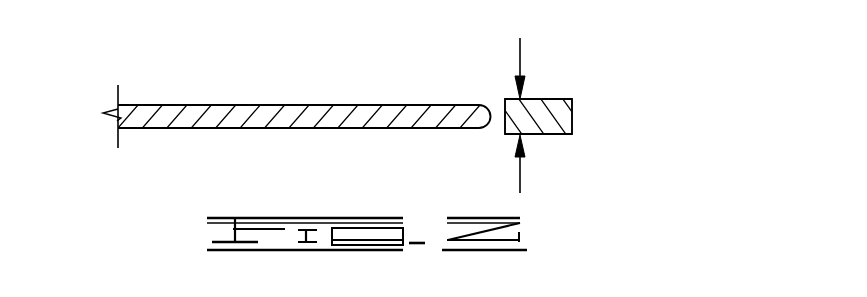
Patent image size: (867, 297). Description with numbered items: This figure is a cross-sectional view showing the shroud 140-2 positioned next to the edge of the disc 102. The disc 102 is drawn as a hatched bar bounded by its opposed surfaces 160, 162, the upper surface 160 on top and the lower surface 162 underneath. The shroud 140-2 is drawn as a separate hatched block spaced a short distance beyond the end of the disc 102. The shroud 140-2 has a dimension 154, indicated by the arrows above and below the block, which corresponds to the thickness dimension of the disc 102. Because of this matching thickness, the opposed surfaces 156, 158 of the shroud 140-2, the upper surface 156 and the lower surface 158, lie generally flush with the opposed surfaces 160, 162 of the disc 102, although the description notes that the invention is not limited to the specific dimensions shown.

The substrate 102 is at (373, 110).
The surface of the disc 160 is at (177, 105).
The surface of the disc 162 is at (205, 129).
The shroud 140-2 is at (572, 113).
The dimension 154 is at (520, 56).
The surface of the shroud 156 is at (545, 98).
The surface of the shroud 158 is at (545, 134).